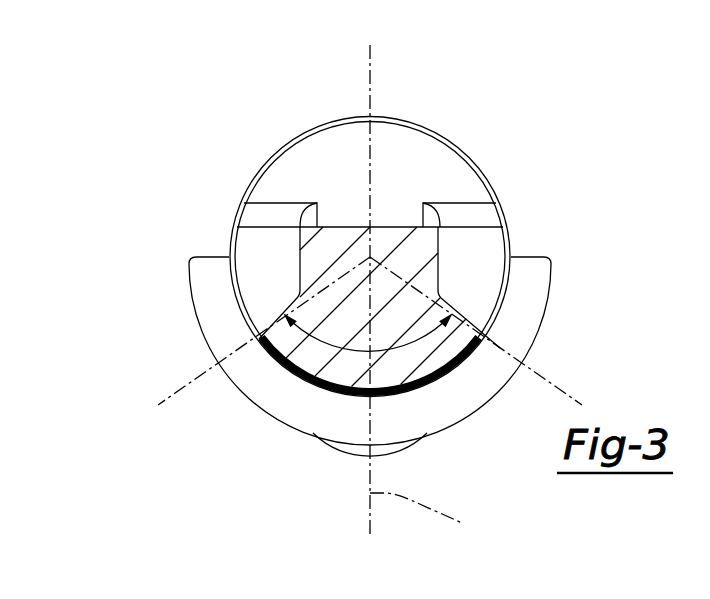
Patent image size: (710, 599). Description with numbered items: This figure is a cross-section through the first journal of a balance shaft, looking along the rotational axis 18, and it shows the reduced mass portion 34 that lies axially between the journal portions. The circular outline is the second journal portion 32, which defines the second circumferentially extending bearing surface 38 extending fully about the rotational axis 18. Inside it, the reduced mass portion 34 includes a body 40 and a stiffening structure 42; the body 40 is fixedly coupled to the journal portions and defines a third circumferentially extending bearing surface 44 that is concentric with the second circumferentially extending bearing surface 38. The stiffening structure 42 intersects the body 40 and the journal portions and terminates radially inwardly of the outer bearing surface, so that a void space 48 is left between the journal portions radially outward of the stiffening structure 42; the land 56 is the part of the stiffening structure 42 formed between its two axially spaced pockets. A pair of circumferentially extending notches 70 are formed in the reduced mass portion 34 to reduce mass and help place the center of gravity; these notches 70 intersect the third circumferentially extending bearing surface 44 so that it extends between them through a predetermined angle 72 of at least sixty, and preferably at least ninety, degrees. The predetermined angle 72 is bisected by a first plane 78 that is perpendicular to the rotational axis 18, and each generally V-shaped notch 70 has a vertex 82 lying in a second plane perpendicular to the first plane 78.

The rotational axis 18 is at (372, 257).
The second journal portion 32 is at (370, 217).
The second circumferentially extending bearing surface 38 is at (438, 137).
The reduced mass portion 34 is at (452, 265).
The body 40 is at (388, 370).
The stiffening structure 42 is at (283, 219).
The third circumferentially extending bearing surface 44 is at (370, 397).
The void space 48 is at (368, 75).
The land 56 is at (336, 227).
The circumferentially extending notches 70 is at (252, 246).
The predetermined angle 72 is at (361, 350).
The first plane 78 is at (433, 518).
The vertex 82 is at (298, 259).